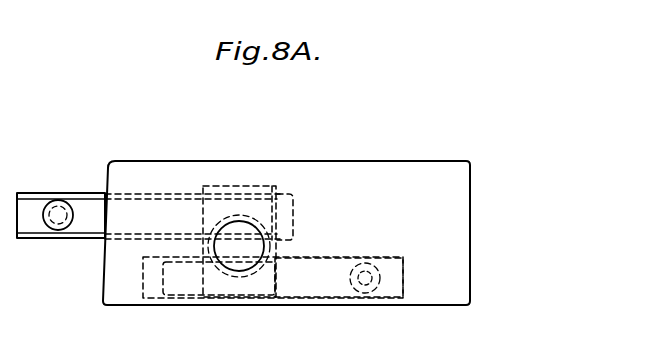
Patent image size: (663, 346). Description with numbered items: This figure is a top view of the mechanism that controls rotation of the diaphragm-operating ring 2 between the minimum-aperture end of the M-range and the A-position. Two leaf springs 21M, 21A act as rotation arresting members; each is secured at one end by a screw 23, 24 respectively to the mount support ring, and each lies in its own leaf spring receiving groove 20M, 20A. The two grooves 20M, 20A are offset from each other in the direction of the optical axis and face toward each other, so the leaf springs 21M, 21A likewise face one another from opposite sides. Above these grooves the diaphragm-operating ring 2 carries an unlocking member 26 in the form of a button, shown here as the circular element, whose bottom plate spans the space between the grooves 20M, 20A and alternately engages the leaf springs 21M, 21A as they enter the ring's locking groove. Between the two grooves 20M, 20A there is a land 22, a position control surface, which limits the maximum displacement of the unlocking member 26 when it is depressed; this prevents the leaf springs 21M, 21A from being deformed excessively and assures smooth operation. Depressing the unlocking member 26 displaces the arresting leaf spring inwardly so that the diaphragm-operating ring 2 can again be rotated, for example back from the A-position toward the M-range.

The diaphragm-operating ring 2 is at (416, 172).
The screw 23 is at (53, 200).
The leaf spring (rotation arresting member for M) 21M is at (148, 227).
The land (position control surface) 22 is at (285, 248).
The leaf spring receiving groove 20M is at (148, 192).
The unlocking member (button) 26 is at (233, 268).
The leaf spring (rotation arresting member for A) 21A is at (297, 288).
The leaf spring receiving groove 20A is at (335, 268).
The screw 24 is at (366, 290).